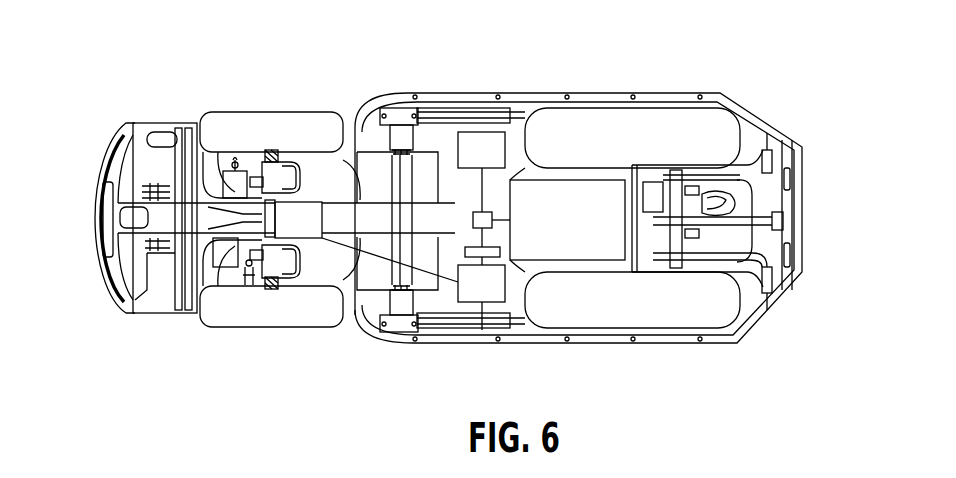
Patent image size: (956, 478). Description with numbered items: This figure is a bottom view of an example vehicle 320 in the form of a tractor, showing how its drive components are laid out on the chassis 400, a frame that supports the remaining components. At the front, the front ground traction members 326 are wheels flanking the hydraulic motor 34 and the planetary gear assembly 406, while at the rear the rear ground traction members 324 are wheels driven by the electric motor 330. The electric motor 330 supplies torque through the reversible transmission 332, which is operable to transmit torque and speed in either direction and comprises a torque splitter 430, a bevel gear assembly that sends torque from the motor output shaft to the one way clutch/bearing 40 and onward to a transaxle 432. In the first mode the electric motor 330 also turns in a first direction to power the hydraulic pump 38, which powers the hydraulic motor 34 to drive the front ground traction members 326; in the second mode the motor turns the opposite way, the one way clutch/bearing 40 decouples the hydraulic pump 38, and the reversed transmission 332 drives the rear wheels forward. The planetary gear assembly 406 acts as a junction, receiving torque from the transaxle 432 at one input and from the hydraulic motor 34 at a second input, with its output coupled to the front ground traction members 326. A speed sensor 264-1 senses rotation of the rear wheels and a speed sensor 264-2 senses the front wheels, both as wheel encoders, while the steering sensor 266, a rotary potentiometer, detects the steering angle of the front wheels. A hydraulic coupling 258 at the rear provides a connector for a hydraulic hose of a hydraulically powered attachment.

The vehicle 320 is at (74, 82).
The speed sensor 264-2 is at (232, 170).
The front ground traction members 326 is at (289, 112).
The hydraulic motor 34 is at (328, 150).
The transaxle 432 is at (407, 95).
The electric motor 330 is at (512, 113).
The rear ground traction members 324 is at (660, 117).
The speed sensor 264-1 is at (733, 193).
The hydraulic coupling 258 is at (797, 238).
The torque splitter 430 is at (473, 217).
The one way clutch/bearing 40 is at (465, 253).
The steering sensor 266 is at (233, 267).
The planetary gear assembly 406 is at (250, 268).
The chassis 400 is at (346, 320).
The hydraulic pump 38 is at (478, 330).
The reversible transmission 332 is at (509, 330).